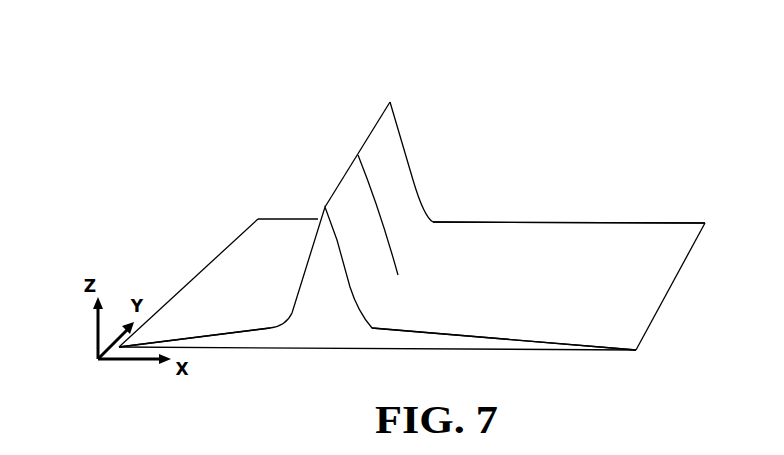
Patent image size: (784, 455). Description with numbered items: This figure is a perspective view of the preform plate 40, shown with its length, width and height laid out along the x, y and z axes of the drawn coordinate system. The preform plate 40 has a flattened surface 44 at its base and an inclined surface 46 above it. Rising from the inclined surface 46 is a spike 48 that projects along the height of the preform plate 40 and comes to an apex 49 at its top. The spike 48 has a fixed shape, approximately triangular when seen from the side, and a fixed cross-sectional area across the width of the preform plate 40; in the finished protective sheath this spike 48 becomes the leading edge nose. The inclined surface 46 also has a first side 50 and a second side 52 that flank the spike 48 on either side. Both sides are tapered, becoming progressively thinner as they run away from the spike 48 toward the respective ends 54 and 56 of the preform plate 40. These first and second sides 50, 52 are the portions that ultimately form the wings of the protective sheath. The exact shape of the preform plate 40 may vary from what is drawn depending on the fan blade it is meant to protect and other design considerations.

The preform plate 40 is at (496, 150).
The flattened surface 44 is at (365, 350).
The inclined surface 46 is at (569, 250).
The spike 48 is at (392, 140).
The apex 49 is at (390, 102).
The first side 50 is at (242, 333).
The second side 52 is at (488, 337).
The end 54 is at (210, 262).
The end 56 is at (667, 292).